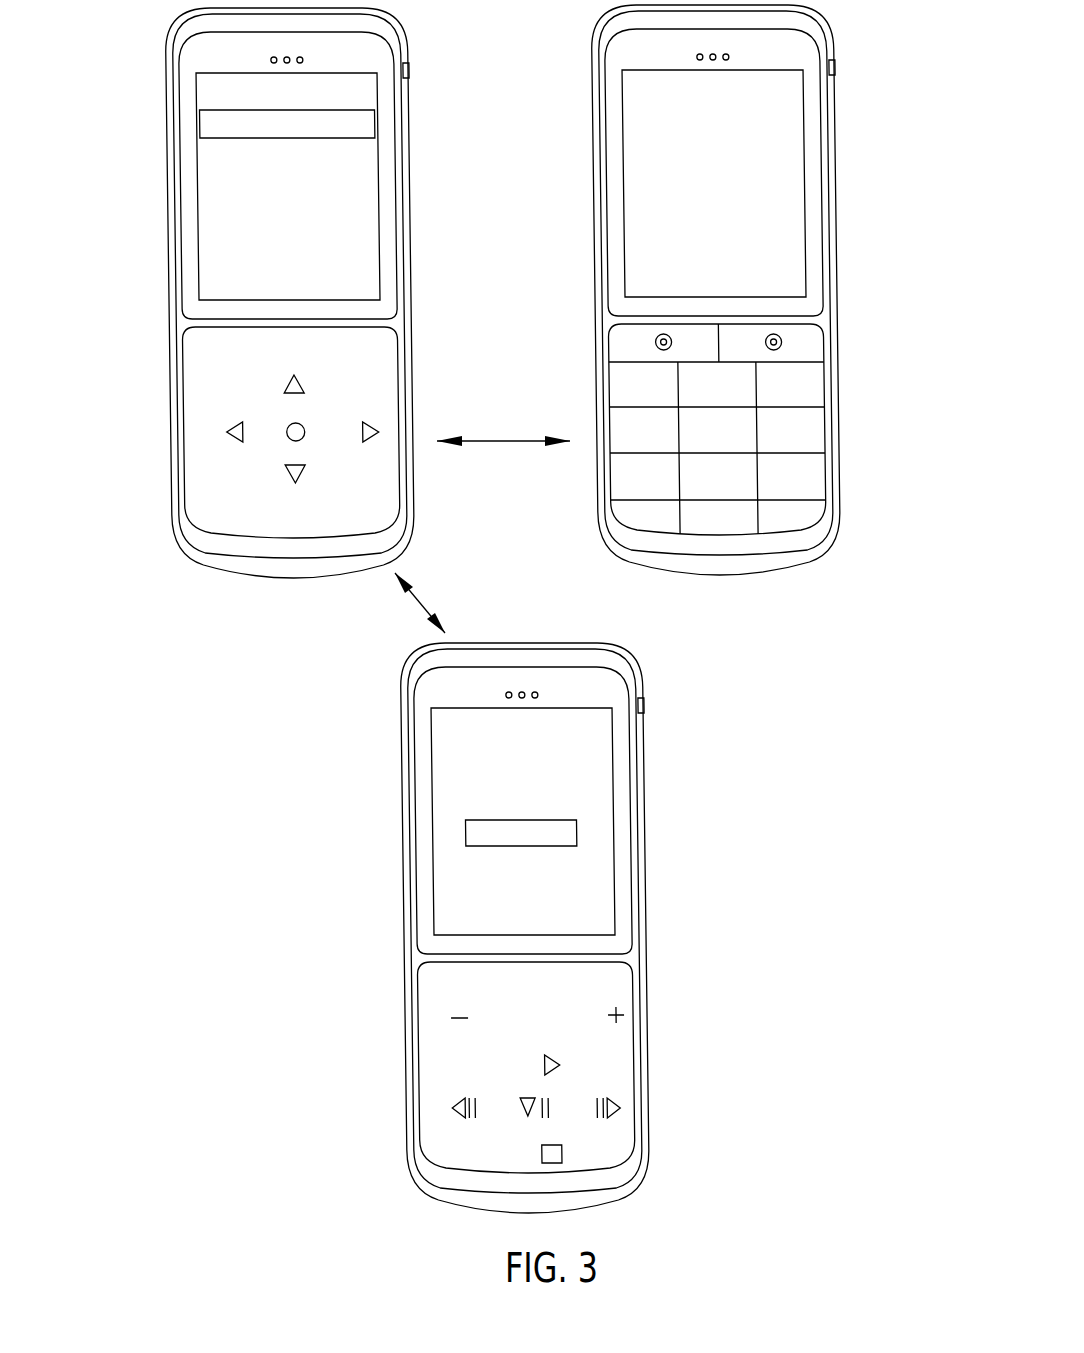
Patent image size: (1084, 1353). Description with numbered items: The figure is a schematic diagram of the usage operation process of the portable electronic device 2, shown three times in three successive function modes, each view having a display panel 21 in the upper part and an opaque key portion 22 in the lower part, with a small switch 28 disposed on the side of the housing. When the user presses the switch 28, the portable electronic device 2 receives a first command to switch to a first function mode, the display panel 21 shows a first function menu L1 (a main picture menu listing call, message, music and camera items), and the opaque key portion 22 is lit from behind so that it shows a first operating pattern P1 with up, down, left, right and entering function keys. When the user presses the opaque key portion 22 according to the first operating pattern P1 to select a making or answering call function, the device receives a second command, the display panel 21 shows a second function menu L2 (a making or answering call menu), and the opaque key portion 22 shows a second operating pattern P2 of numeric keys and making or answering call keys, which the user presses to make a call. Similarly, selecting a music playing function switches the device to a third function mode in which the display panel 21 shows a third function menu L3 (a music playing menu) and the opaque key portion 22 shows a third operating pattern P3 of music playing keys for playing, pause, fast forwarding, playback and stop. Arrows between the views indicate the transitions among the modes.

The portable electronic device 2 is at (114, 35).
The display panel 21 is at (378, 118).
The opaque key portion 22 is at (188, 409).
The switch 28 is at (411, 63).
The first function menu L1 is at (380, 217).
The second function menu L2 is at (800, 180).
The third function menu L3 is at (604, 865).
The first operating pattern P1 is at (382, 368).
The second operating pattern P2 is at (826, 336).
The third operating pattern P3 is at (632, 972).